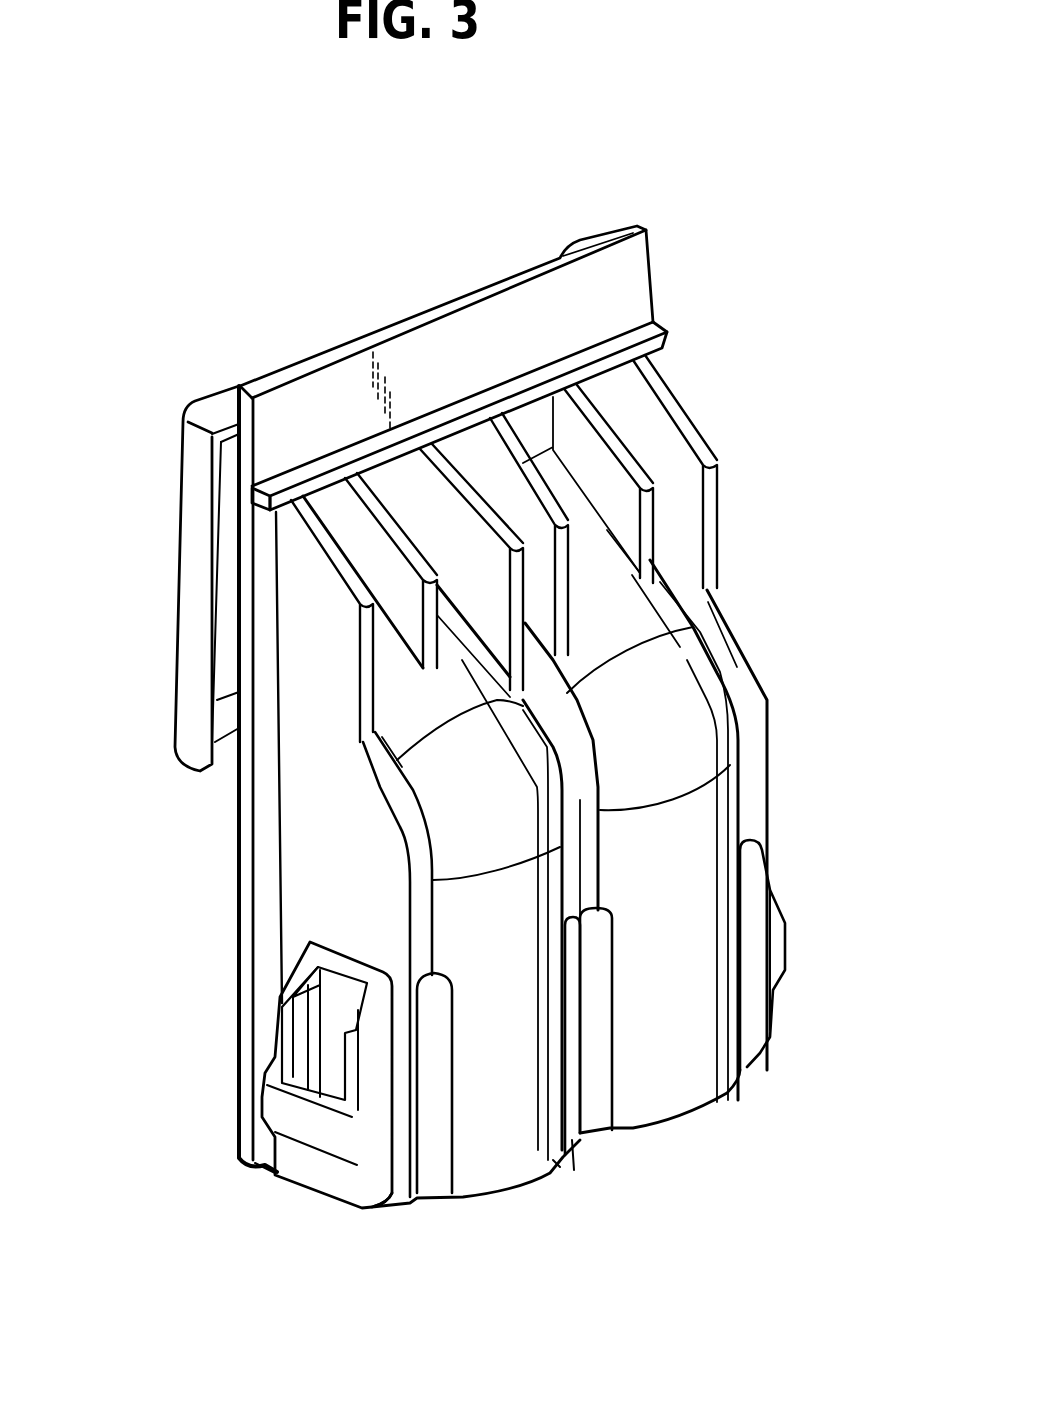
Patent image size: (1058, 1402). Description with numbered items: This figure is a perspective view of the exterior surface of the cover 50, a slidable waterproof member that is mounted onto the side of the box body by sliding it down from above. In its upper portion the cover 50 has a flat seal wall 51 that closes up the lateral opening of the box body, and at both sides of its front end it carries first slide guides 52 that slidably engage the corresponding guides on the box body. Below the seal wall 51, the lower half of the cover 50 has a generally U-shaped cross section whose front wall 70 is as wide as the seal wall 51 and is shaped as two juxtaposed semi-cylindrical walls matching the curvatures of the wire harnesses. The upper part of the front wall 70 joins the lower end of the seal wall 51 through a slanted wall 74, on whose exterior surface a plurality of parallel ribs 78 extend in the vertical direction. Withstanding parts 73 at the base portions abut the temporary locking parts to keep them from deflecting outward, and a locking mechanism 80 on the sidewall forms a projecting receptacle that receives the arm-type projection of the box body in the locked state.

The cover 50 is at (597, 213).
The seal wall 51 is at (418, 377).
The first slide guide 52 is at (195, 578).
The front wall 70 is at (683, 897).
The withstanding part 73 is at (745, 1072).
The slanted wall 74 is at (640, 617).
The ribs 78 is at (680, 418).
The locking mechanism 80 is at (315, 1193).